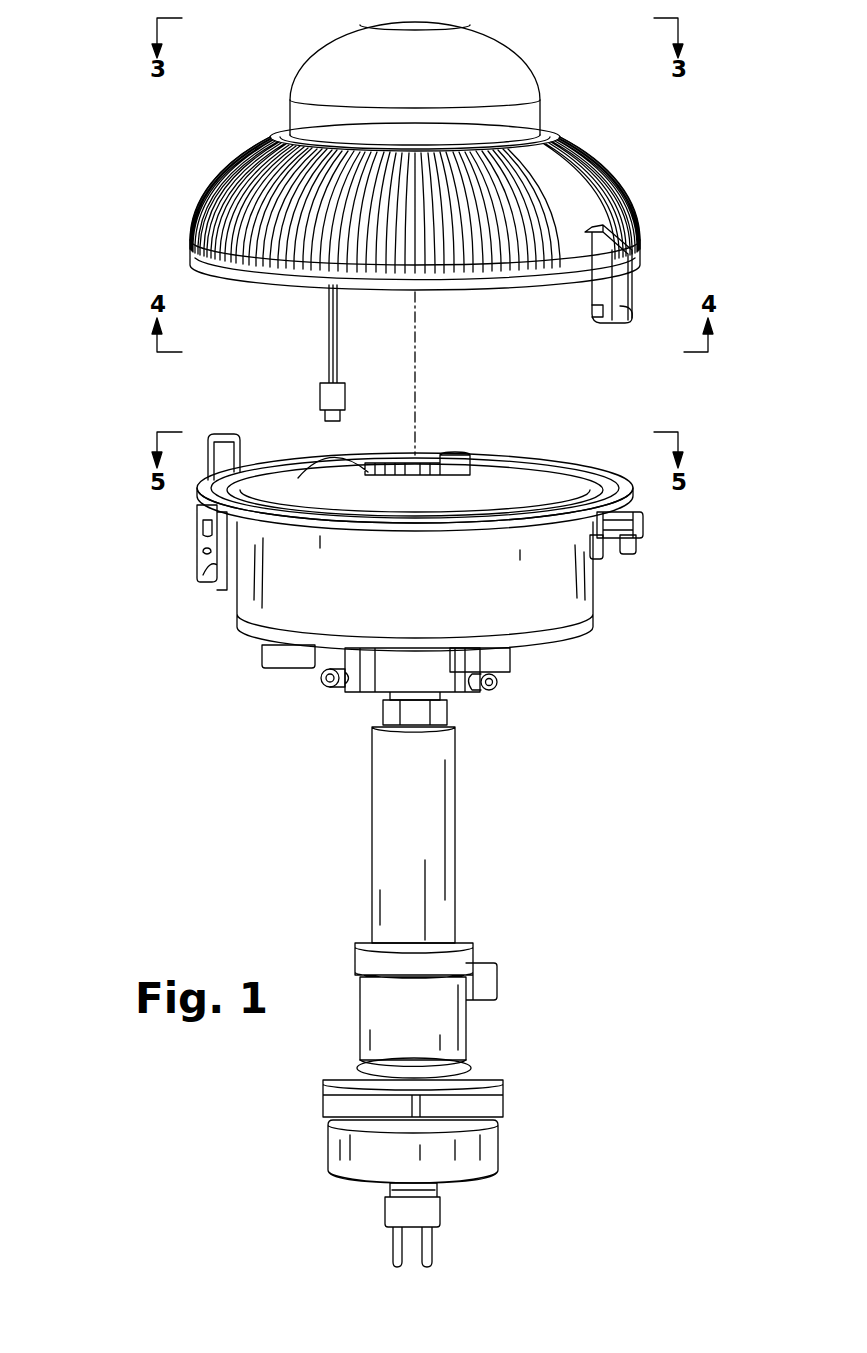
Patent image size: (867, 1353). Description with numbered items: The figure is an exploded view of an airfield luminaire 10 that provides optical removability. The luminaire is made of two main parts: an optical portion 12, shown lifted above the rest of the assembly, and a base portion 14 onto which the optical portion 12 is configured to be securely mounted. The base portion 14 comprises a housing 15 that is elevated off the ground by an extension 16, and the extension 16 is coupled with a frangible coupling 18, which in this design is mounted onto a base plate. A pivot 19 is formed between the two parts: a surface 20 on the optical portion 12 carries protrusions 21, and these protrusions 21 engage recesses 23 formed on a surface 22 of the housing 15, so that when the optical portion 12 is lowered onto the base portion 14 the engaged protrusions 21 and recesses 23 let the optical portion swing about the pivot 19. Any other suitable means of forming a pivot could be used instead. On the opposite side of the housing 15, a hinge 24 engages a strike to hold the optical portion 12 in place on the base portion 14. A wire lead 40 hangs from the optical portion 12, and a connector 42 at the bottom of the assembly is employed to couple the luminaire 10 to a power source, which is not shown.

The airfield luminaire 10 is at (108, 93).
The optical portion 12 is at (577, 187).
The base portion 14 is at (707, 462).
The housing 15 is at (317, 612).
The extension 16 is at (440, 902).
The frangible coupling 18 is at (493, 1105).
The pivot 19 is at (750, 220).
The surface 20 is at (634, 288).
The protrusions 21 is at (632, 310).
The surface 22 is at (642, 521).
The recesses 23 is at (628, 550).
The hinge 24 is at (196, 538).
The wire connector 40 is at (341, 343).
The connector 42 is at (442, 1213).